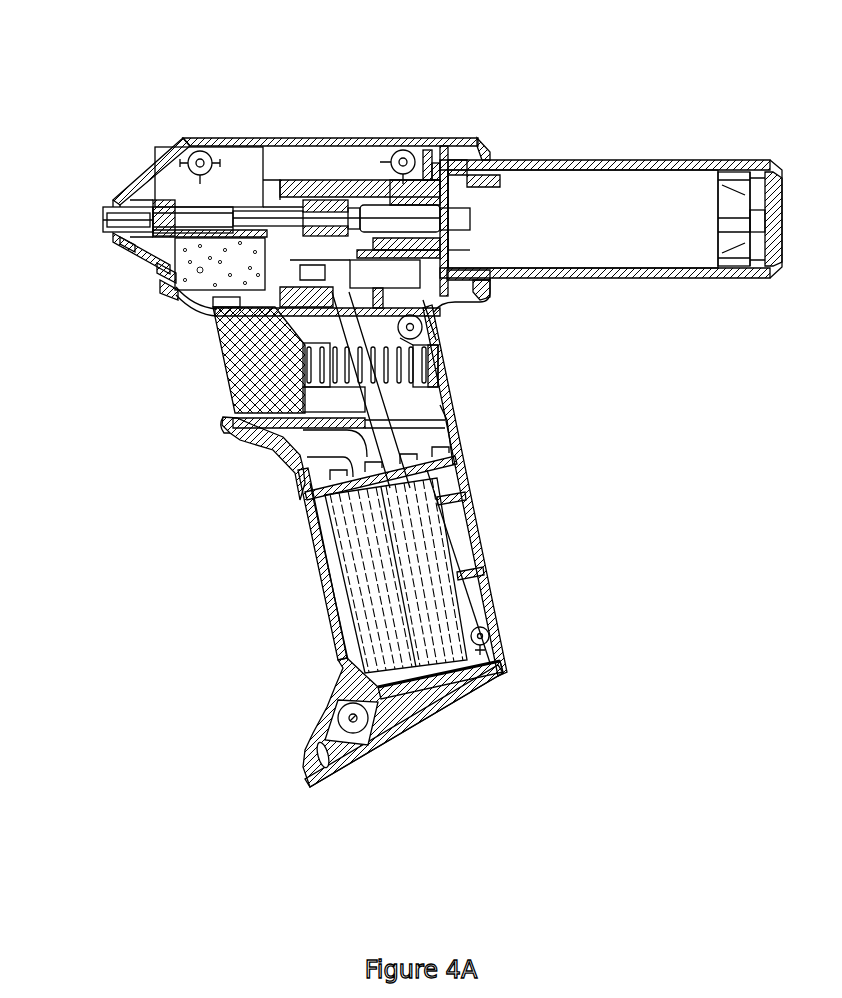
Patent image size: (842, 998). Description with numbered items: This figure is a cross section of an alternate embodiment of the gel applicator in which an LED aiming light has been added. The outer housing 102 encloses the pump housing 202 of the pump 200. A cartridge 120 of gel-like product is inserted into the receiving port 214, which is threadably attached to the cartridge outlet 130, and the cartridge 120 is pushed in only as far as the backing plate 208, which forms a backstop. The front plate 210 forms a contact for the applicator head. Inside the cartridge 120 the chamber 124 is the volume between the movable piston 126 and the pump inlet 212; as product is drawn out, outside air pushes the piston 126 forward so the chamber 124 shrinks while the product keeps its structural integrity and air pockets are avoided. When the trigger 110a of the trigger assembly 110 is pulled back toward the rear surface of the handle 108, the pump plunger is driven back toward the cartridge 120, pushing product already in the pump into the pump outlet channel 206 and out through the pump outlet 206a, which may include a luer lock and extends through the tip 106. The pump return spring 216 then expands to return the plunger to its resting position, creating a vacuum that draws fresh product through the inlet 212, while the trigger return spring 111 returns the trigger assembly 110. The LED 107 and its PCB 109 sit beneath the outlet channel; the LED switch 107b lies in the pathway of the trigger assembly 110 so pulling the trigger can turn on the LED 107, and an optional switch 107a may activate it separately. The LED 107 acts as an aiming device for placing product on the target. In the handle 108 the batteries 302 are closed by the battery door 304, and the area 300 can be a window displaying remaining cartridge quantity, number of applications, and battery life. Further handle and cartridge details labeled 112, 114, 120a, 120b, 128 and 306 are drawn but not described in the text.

The housing 102 is at (205, 140).
The tip 106 is at (118, 212).
The LED 107 is at (170, 292).
The switch 107a is at (437, 357).
The LED switch 107b is at (165, 278).
The handle 108 is at (458, 467).
The PCB 109 is at (210, 314).
The trigger assembly 110 is at (212, 384).
The trigger 110a is at (228, 415).
The trigger return spring 111 is at (435, 393).
The handle bottom 112 is at (312, 760).
The handle front wall 114 is at (308, 543).
The cartridge 120 is at (678, 160).
The pivot 120a is at (428, 318).
The lower wall 120b is at (442, 418).
The chamber 124 is at (560, 213).
The piston 126 is at (730, 217).
The barrel bottom wall 128 is at (447, 243).
The cartridge outlet 130 is at (447, 250).
The pump 200 is at (323, 190).
The pump housing 202 is at (275, 215).
The pump outlet channel 206 is at (177, 216).
The pump outlet 206a is at (120, 220).
The backing plate 208 is at (442, 168).
The front plate 210 is at (222, 158).
The pump inlet 212 is at (457, 218).
The receiving port 214 is at (370, 196).
The pump return spring 216 is at (433, 299).
The area 300 is at (455, 533).
The batteries 302 is at (422, 575).
The battery door 304 is at (393, 690).
The battery contacts 306 is at (302, 500).